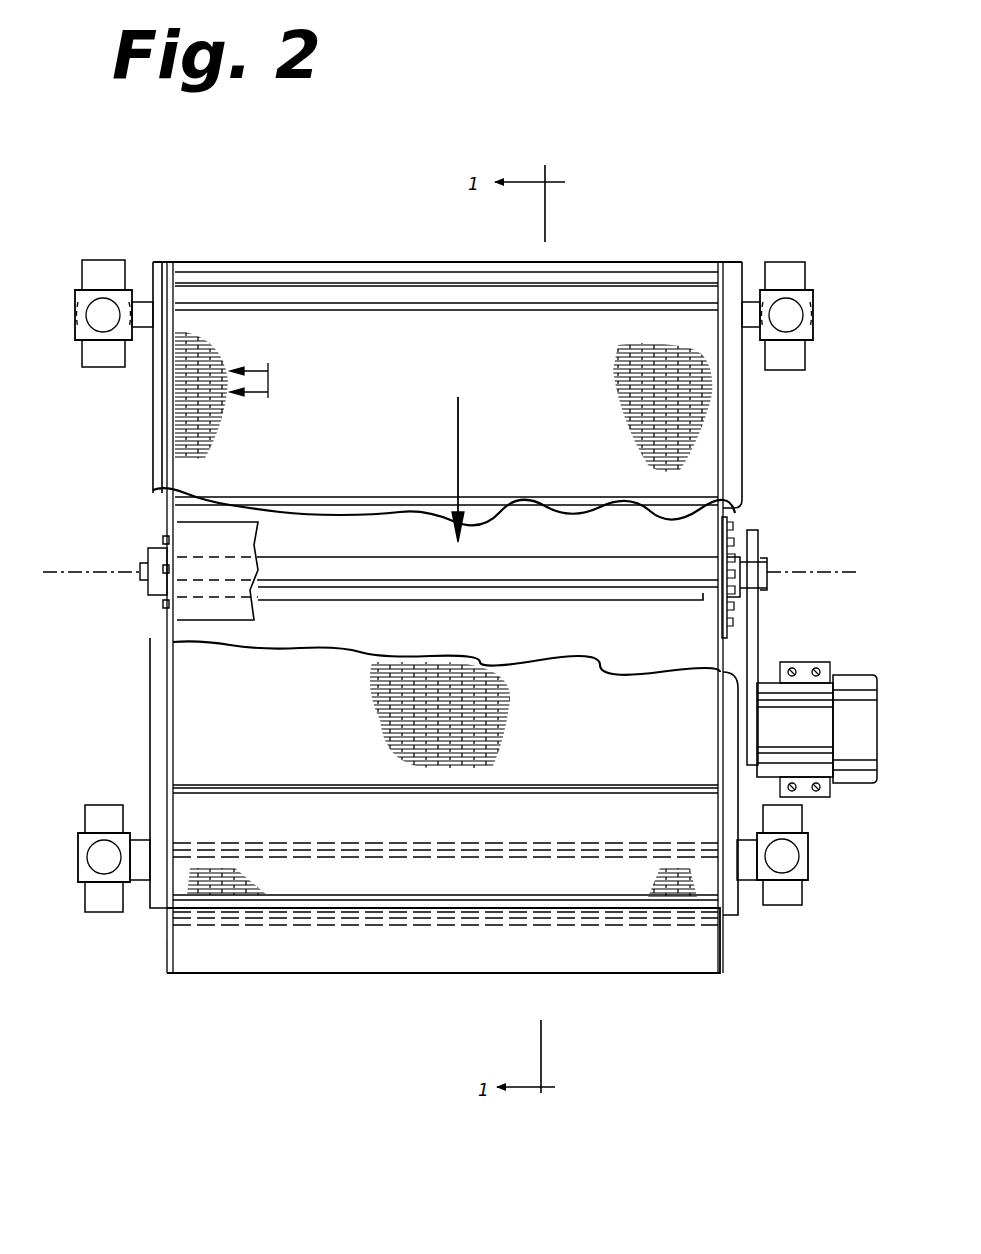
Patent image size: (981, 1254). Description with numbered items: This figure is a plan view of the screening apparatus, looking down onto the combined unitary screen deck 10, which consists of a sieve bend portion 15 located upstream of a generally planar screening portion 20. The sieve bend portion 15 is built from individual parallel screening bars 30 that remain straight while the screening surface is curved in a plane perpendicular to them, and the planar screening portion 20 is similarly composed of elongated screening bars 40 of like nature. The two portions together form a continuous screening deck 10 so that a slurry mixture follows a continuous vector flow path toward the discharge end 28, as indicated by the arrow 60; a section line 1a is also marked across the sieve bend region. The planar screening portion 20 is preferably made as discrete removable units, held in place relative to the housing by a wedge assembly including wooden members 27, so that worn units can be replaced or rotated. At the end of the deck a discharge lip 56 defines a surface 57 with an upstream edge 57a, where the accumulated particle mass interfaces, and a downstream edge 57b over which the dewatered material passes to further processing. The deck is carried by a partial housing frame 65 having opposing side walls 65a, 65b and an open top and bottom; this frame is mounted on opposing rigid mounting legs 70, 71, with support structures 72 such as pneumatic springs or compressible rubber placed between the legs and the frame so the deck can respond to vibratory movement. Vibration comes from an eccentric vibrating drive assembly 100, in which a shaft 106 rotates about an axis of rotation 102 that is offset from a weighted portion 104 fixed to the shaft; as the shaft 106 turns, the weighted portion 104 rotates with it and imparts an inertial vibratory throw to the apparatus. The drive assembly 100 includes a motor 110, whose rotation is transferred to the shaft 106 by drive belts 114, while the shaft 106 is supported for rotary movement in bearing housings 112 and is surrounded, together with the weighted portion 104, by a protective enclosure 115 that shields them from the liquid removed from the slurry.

The screen deck 10 is at (782, 272).
The sieve bend portion 15 is at (338, 454).
The section line 1a is at (248, 390).
The planar screening portion 20 is at (303, 716).
The wooden members 27 is at (718, 688).
The discharge end 28 is at (430, 900).
The screening bars 30 is at (195, 345).
The screening bars 40 is at (445, 752).
The discharge lip 56 is at (155, 968).
The surface 57 is at (438, 959).
The upstream edge 57a is at (722, 915).
The downstream edge 57b is at (655, 973).
The arrow 60 is at (458, 428).
The partial housing frame 65 is at (325, 262).
The side wall 65a is at (160, 716).
The side wall 65b is at (735, 442).
The rigid mounting leg 70 is at (88, 276).
The rigid mounting leg 71 is at (80, 330).
The support structures 72 is at (105, 290).
The vibrating drive assembly 100 is at (778, 556).
The axis of rotation 102 is at (78, 572).
The weighted portion 104 is at (688, 600).
The shaft 106 is at (588, 566).
The motor 110 is at (848, 787).
The bearing housings 112 is at (152, 600).
The drive belts 114 is at (752, 634).
The protective enclosure 115 is at (190, 530).